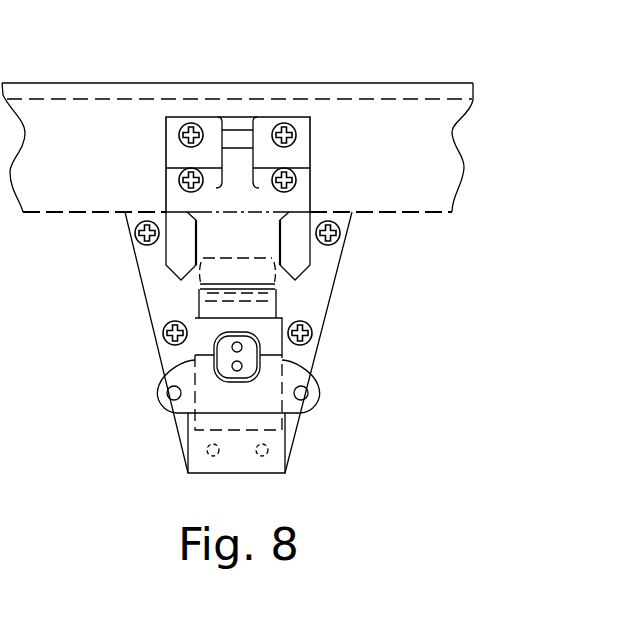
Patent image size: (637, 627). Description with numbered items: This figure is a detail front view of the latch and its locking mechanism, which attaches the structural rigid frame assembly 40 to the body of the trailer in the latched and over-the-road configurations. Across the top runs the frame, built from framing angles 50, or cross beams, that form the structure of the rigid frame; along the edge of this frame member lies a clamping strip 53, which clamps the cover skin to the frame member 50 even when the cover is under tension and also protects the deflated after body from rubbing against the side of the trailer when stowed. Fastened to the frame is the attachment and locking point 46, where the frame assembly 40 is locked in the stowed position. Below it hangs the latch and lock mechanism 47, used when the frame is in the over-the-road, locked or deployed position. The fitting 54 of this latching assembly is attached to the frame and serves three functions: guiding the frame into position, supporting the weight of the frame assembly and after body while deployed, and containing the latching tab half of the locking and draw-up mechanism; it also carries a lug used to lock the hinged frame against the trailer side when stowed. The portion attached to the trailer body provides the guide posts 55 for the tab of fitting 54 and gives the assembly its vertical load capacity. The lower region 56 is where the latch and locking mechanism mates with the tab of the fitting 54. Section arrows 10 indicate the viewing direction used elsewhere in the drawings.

The section line / viewing direction 10 is at (53, 78).
The structural rigid frame assembly 40 is at (463, 160).
The attachment and locking point 46 is at (310, 142).
The latch and lock mechanism 47 is at (320, 352).
The framing angles 50 is at (110, 99).
The clamping strip 53 is at (197, 83).
The fitting 54 is at (310, 190).
The guide posts 55 is at (303, 270).
The latch mating location 56 is at (195, 348).